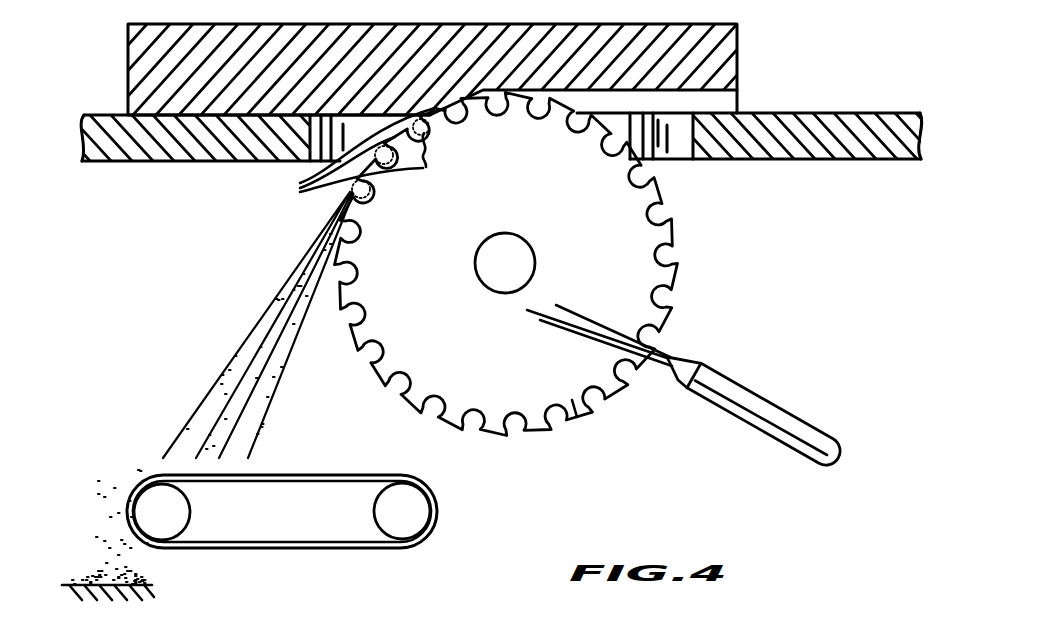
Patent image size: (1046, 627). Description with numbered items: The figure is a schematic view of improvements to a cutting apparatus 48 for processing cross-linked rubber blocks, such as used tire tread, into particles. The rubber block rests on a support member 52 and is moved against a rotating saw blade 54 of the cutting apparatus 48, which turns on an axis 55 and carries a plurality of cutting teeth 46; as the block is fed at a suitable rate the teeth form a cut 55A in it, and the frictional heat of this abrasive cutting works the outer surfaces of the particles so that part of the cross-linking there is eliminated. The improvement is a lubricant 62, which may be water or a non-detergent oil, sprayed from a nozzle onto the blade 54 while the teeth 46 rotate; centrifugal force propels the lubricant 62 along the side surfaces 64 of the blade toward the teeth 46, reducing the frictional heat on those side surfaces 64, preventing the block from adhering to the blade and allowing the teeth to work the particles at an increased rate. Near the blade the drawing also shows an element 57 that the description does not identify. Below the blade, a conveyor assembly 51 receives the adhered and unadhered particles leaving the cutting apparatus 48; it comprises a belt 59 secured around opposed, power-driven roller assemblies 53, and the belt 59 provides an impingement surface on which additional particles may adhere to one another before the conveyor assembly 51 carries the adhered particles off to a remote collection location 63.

The cutting teeth 46 is at (300, 192).
The cutting apparatus 48 is at (683, 217).
The conveyor assembly 51 is at (322, 514).
The support member 52 is at (172, 163).
The roller assemblies 53 is at (388, 487).
The saw blade 54 is at (585, 415).
The axis 55 is at (532, 251).
The cut 55A is at (752, 143).
The chip guide 57 is at (426, 169).
The belt 59 is at (440, 507).
The lubricant 62 is at (598, 340).
The remote collection location 63 is at (82, 504).
The side surfaces 64 is at (525, 365).